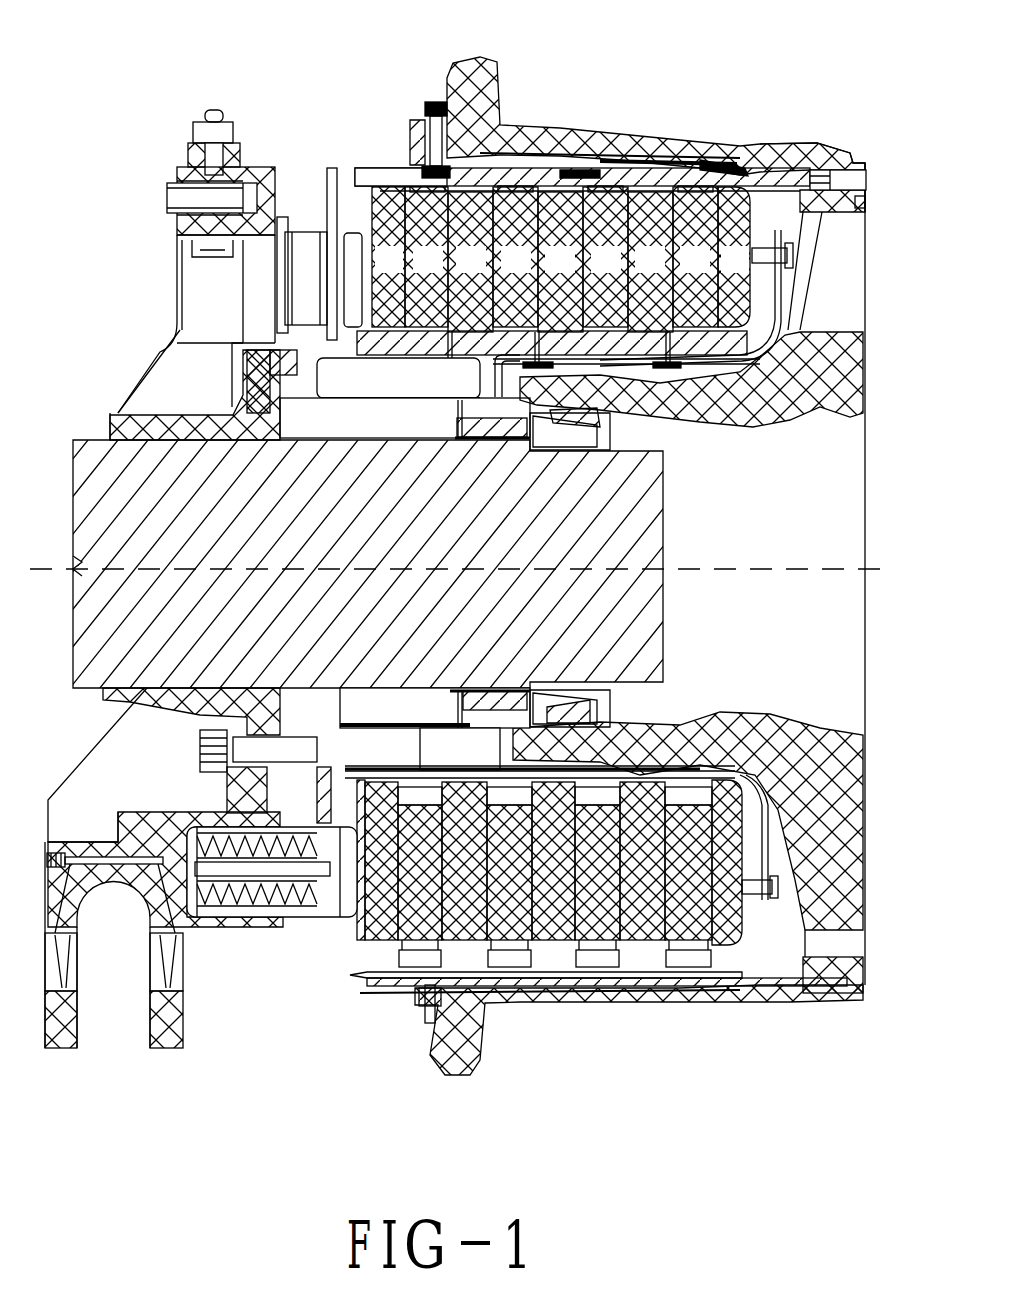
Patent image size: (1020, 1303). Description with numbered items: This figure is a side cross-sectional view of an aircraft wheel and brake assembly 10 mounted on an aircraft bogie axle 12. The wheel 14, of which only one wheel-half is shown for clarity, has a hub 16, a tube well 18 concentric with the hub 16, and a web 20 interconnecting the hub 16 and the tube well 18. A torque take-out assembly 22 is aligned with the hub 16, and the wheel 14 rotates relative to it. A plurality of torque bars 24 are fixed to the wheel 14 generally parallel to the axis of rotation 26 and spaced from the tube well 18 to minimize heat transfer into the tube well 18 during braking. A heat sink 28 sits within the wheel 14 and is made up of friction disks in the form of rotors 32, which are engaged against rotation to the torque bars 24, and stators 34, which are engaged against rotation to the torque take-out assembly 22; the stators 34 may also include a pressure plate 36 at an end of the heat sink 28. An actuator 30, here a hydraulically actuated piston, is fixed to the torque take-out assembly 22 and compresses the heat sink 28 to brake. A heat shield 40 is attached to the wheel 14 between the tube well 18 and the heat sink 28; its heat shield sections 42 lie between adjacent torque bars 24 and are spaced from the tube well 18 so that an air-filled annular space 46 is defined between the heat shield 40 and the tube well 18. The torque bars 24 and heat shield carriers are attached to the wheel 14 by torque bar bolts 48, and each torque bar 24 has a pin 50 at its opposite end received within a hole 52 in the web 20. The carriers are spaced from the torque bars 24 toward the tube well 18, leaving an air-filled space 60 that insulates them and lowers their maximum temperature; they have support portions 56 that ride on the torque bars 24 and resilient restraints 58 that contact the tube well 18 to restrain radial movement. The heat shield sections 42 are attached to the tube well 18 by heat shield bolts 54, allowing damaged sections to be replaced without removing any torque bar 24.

The wheel and brake assembly 10 is at (322, 134).
The aircraft bogie axle 12 is at (344, 523).
The wheel 14 is at (653, 130).
The hub 16 is at (620, 405).
The tube well 18 is at (573, 998).
The web 20 is at (851, 286).
The torque take-out assembly 22 is at (427, 360).
The torque bars 24 is at (388, 163).
The axis of rotation 26 is at (723, 570).
The heat sink 28 is at (582, 194).
The actuator 30 is at (298, 912).
The rotors 32 is at (442, 272).
The stators 34 is at (485, 272).
The pressure plate 36 is at (404, 272).
The heat shield 40 is at (360, 988).
The heat shield sections 42 is at (656, 128).
The annular space 46 is at (633, 148).
The torque bar bolts 48 is at (428, 102).
The pin 50 is at (793, 180).
The hole 52 is at (858, 207).
The heat shield bolts 54 is at (428, 1023).
The support portions 56 is at (770, 143).
The resilient restraints 58 is at (702, 155).
The space 60 is at (603, 153).